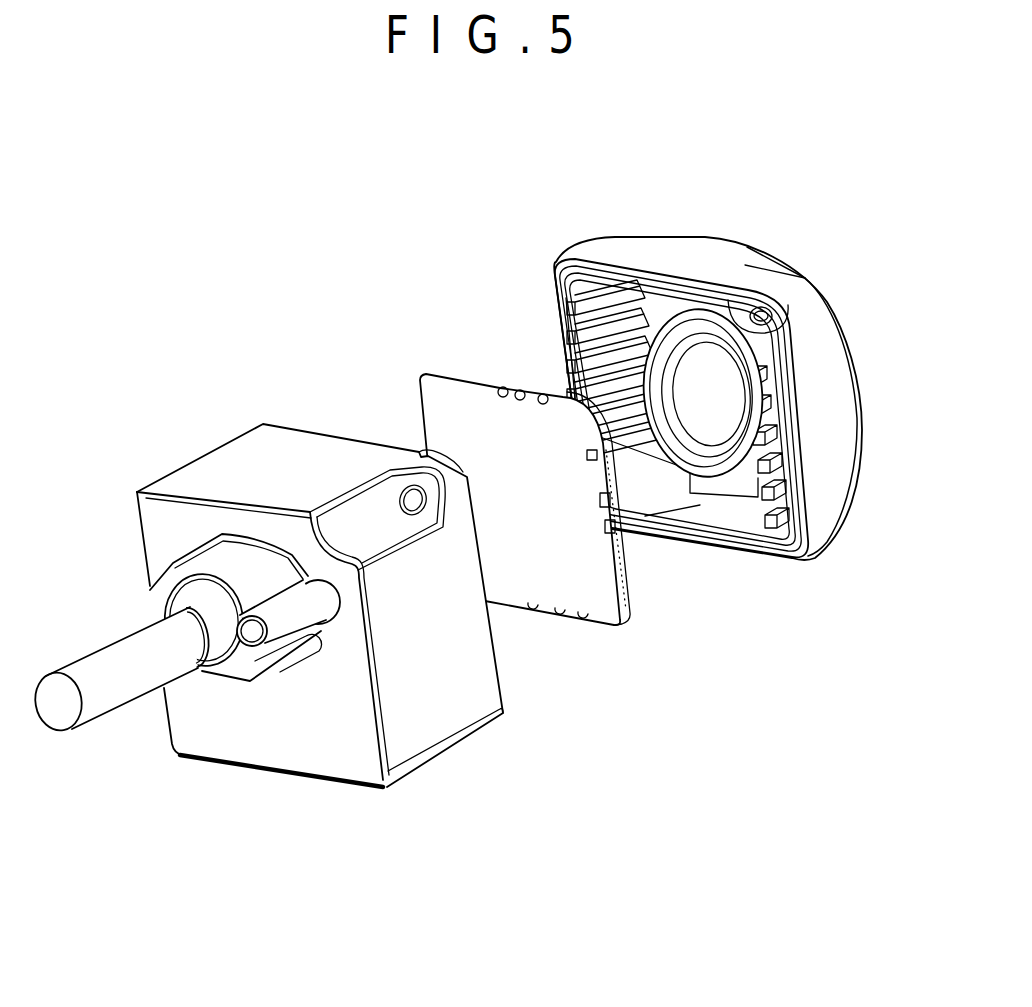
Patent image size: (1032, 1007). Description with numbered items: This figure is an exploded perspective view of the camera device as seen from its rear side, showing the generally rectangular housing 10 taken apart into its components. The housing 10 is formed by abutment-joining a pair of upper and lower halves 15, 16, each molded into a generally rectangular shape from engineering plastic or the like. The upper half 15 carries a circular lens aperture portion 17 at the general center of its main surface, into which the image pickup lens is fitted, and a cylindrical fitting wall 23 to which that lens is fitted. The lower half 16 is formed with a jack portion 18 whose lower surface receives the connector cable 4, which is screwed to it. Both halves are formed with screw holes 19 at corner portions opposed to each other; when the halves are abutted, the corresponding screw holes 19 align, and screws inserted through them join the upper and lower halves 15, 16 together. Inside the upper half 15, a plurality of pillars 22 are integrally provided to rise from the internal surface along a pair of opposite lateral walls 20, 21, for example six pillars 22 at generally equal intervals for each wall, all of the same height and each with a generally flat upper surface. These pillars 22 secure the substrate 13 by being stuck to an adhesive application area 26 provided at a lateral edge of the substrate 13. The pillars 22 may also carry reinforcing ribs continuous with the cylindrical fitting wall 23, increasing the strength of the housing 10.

The housing 10 is at (230, 188).
The connector cable 4 is at (83, 667).
The substrate 13 is at (582, 593).
The upper half 15 is at (594, 250).
The lower half 16 is at (258, 447).
The lens aperture portion 17 is at (722, 437).
The jack portion 18 is at (310, 612).
The screw holes 19 is at (407, 492).
The lateral wall 20 is at (827, 437).
The lateral wall 21 is at (570, 352).
The pillars 22 is at (568, 305).
The cylindrical fitting wall 23 is at (707, 318).
The adhesive application area 26 is at (632, 574).